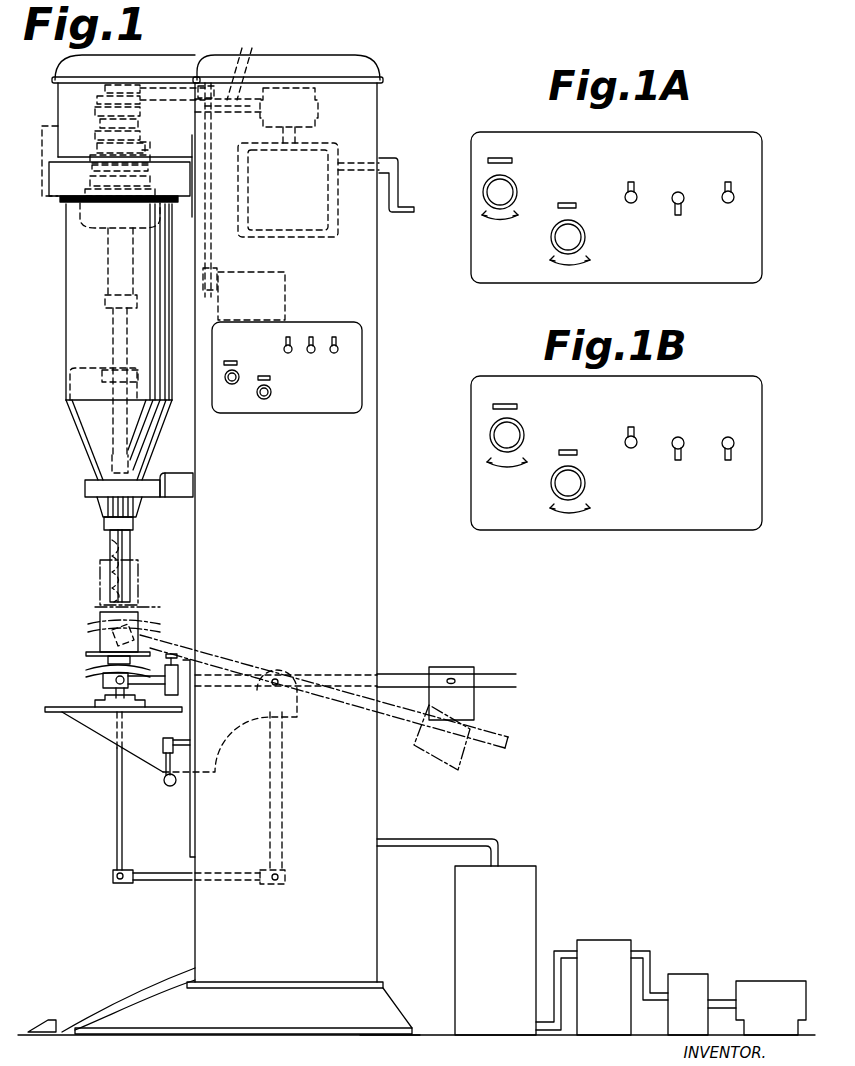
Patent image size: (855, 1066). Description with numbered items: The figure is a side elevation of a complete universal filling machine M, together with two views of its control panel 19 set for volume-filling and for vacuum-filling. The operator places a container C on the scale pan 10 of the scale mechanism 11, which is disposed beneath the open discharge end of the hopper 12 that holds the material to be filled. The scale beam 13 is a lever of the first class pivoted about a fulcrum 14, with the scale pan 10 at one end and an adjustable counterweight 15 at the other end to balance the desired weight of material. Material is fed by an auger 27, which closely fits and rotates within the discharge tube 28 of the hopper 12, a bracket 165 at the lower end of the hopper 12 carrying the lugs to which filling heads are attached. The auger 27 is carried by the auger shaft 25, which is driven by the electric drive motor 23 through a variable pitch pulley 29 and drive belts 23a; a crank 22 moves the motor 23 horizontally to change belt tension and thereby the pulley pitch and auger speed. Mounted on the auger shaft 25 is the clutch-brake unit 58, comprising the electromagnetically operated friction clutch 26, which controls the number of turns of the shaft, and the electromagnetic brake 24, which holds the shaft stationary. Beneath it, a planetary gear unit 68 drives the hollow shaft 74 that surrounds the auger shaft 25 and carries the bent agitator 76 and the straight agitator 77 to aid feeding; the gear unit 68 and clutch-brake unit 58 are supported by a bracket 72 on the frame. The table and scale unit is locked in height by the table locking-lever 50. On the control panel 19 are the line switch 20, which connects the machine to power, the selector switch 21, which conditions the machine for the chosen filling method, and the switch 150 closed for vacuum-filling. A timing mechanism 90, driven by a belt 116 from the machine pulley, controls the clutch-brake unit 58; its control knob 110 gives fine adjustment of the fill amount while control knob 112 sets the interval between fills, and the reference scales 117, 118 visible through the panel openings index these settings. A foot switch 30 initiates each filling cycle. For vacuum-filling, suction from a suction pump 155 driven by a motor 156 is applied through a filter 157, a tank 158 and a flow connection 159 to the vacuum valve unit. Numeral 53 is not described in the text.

In FIG. 1, the scale pan 10 is at (86, 654).
In FIG. 1, the scale mechanism 11 is at (258, 611).
In FIG. 1, the hopper 12 is at (110, 342).
In FIG. 1, the scale beam 13 is at (103, 680).
In FIG. 1, the fulcrum 14 is at (280, 671).
In FIG. 1, the counterweight 15 is at (455, 667).
In FIG. 1, the control panel 19 is at (287, 367).
In FIG. 1A, the control panel 19 is at (616, 207).
In FIG. 1B, the control panel 19 is at (616, 453).
In FIG. 1, the line switch 20 is at (290, 353).
In FIG. 1A, the line switch 20 is at (628, 204).
In FIG. 1B, the line switch 20 is at (628, 449).
In FIG. 1, the selector switch 21 is at (313, 353).
In FIG. 1A, the selector switch 21 is at (676, 215).
In FIG. 1B, the selector switch 21 is at (677, 460).
In FIG. 1, the crank 22 is at (398, 176).
In FIG. 1, the electric drive motor 23 is at (322, 212).
In FIG. 1, the drive belts 23a is at (203, 67).
In FIG. 1, the electromagnetic brake 24 is at (90, 194).
In FIG. 1, the auger shaft 25 is at (98, 115).
In FIG. 1, the friction clutch 26 is at (146, 146).
In FIG. 1, the auger 27 is at (112, 552).
In FIG. 1, the discharge tube 28 is at (130, 553).
In FIG. 1, the variable pitch pulley 29 is at (307, 72).
In FIG. 1, the foot switch 30 is at (47, 1020).
In FIG. 1, the table locking-lever 50 is at (166, 786).
In FIG. 1, the operating rod 53 is at (117, 802).
In FIG. 1, the clutch-brake unit 58 is at (42, 180).
In FIG. 1, the planetary gear unit 68 is at (95, 222).
In FIG. 1, the bracket 72 is at (162, 193).
In FIG. 1, the hollow shaft 74 is at (118, 337).
In FIG. 1, the bent agitator 76 is at (68, 423).
In FIG. 1, the straight agitator 77 is at (138, 447).
In FIG. 1, the timing mechanism 90 is at (287, 292).
In FIG. 1, the control knob 110 is at (271, 393).
In FIG. 1A, the control knob 110 is at (553, 240).
In FIG. 1B, the control knob 110 is at (557, 487).
In FIG. 1, the control knob 112 is at (230, 384).
In FIG. 1A, the control knob 112 is at (510, 193).
In FIG. 1B, the control knob 112 is at (517, 428).
In FIG. 1, the belt 116 is at (208, 244).
In FIG. 1, the reference scale 117 is at (264, 373).
In FIG. 1A, the reference scale 117 is at (570, 203).
In FIG. 1B, the reference scale 117 is at (571, 450).
In FIG. 1, the reference scale 118 is at (230, 358).
In FIG. 1A, the reference scale 118 is at (512, 160).
In FIG. 1B, the reference scale 118 is at (510, 404).
In FIG. 1, the switch 150 is at (334, 345).
In FIG. 1A, the switch 150 is at (724, 204).
In FIG. 1B, the switch 150 is at (726, 460).
In FIG. 1, the suction pump 155 is at (662, 974).
In FIG. 1, the motor 156 is at (748, 981).
In FIG. 1, the filter 157 is at (582, 940).
In FIG. 1, the tank 158 is at (517, 866).
In FIG. 1, the flow connection 159 is at (408, 838).
In FIG. 1, the bracket 165 is at (180, 488).
In FIG. 1, the universal filling machine M is at (390, 457).
In FIG. 1, the container C is at (100, 621).